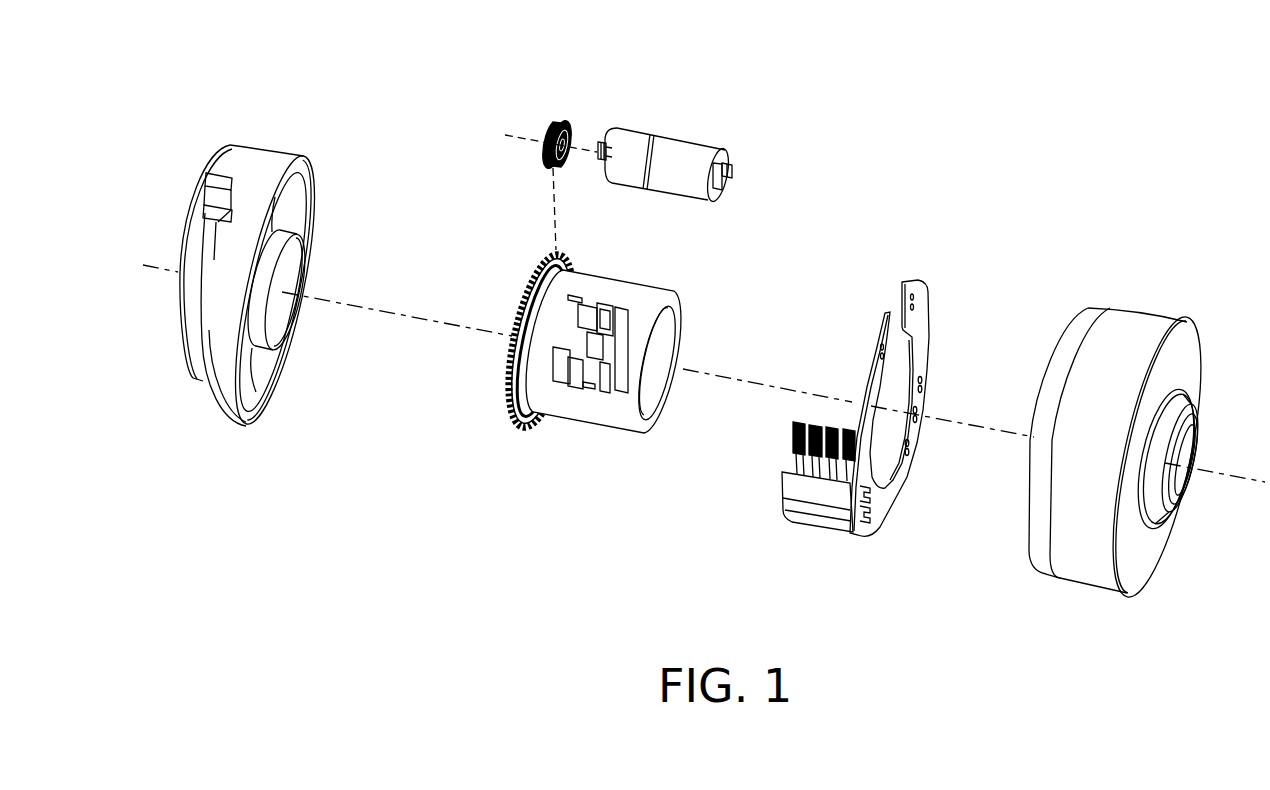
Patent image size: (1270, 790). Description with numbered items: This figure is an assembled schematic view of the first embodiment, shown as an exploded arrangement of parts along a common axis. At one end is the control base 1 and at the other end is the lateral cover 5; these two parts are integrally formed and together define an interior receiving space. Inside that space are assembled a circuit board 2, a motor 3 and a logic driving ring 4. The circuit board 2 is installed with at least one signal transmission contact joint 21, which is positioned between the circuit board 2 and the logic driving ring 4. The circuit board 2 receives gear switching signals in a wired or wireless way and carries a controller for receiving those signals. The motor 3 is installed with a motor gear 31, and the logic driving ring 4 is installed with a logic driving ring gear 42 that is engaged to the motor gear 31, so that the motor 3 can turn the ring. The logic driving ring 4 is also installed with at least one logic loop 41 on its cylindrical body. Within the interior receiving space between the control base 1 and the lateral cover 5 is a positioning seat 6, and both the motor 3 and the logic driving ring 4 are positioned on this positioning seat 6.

The control base 1 is at (1152, 316).
The circuit board 2 is at (918, 279).
The signal transmission contact joint 21 is at (793, 450).
The motor 3 is at (673, 137).
The motor gear 31 is at (567, 123).
The logic driving ring 4 is at (590, 425).
The logic loop 41 is at (557, 385).
The logic driving ring gear 42 is at (527, 319).
The lateral cover 5 is at (303, 157).
The positioning seat 6 is at (279, 235).